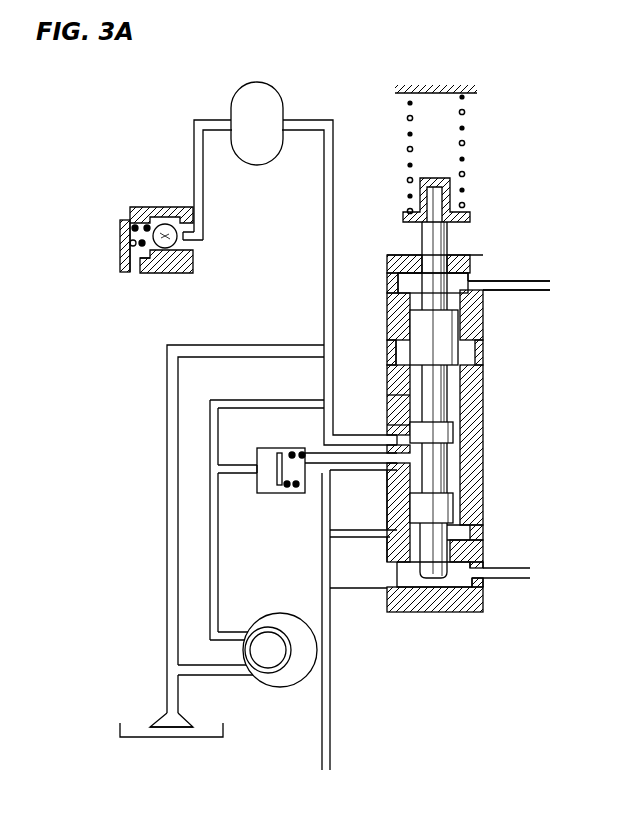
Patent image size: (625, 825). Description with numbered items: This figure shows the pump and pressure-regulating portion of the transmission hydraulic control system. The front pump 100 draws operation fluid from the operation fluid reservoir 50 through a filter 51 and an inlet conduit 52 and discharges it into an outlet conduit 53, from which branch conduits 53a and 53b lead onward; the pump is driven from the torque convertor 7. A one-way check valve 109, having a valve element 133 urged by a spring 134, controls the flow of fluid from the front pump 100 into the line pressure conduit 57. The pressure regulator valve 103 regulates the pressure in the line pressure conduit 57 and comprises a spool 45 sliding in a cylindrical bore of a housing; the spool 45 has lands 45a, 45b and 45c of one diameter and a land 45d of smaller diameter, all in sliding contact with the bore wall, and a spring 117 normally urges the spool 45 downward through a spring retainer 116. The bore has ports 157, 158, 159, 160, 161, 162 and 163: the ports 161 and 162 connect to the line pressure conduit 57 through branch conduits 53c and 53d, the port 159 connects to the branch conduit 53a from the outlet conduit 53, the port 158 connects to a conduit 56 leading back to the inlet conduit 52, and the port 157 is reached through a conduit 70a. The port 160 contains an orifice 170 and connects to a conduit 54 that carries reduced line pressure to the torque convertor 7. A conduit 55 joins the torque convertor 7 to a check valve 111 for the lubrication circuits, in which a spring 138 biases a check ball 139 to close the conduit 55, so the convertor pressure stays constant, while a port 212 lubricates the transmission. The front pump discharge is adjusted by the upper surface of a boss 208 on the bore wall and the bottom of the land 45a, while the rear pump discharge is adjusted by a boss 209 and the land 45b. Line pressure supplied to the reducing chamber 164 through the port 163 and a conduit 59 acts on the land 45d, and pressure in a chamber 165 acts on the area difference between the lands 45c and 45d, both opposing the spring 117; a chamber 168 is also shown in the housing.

The torque convertor 7 is at (273, 88).
The spool 45 is at (425, 257).
The land 45a is at (456, 335).
The land 45b is at (452, 432).
The land 45c is at (455, 497).
The land of smaller diameter 45d is at (442, 580).
The operation fluid reservoir 50 is at (135, 727).
The filter 51 is at (175, 728).
The inlet conduit 52 is at (213, 676).
The outlet conduit 53 is at (219, 596).
The branch conduit 53a is at (219, 402).
The branch conduit 53b is at (235, 465).
The branch conduit 53c is at (340, 474).
The branch conduit 53d is at (340, 538).
The conduit 54 is at (333, 160).
The conduit 55 is at (200, 193).
The conduit 56 is at (167, 470).
The line pressure conduit 57 is at (330, 718).
The conduit 59 is at (515, 579).
The conduit 70a is at (522, 306).
The front pump 100 is at (285, 690).
The pressure regulator valve 103 is at (508, 216).
The one-way check valve 109 is at (275, 493).
The check valve 111 is at (115, 257).
The spring retainer 116 is at (430, 178).
The spring 117 is at (465, 127).
The valve element 133 is at (277, 477).
The spring 134 is at (295, 488).
The spring 138 is at (132, 222).
The check ball 139 is at (163, 226).
The port 157 is at (483, 285).
The port 158 is at (393, 347).
The port 159 is at (392, 395).
The port 160 is at (397, 450).
The port 161 is at (390, 470).
The port 162 is at (390, 540).
The port 163 is at (486, 572).
The reducing chamber 164 is at (420, 588).
The chamber 165 is at (470, 532).
The valve body chamber 168 is at (450, 262).
The orifice 170 is at (397, 437).
The boss 208 is at (398, 367).
The boss 209 is at (398, 427).
The port 212 is at (140, 262).